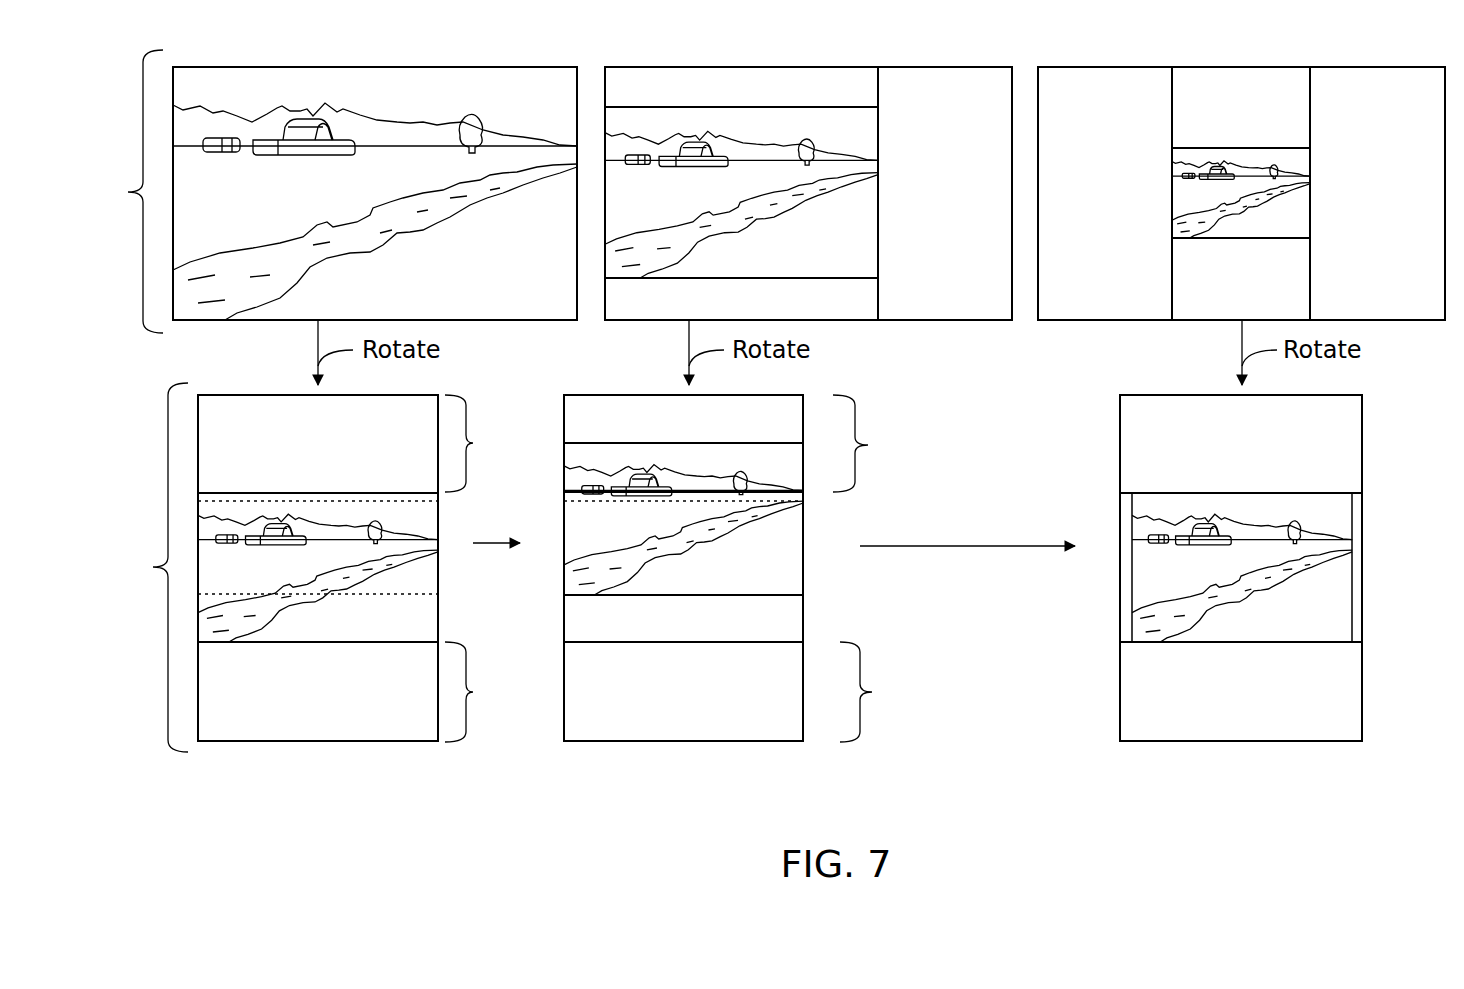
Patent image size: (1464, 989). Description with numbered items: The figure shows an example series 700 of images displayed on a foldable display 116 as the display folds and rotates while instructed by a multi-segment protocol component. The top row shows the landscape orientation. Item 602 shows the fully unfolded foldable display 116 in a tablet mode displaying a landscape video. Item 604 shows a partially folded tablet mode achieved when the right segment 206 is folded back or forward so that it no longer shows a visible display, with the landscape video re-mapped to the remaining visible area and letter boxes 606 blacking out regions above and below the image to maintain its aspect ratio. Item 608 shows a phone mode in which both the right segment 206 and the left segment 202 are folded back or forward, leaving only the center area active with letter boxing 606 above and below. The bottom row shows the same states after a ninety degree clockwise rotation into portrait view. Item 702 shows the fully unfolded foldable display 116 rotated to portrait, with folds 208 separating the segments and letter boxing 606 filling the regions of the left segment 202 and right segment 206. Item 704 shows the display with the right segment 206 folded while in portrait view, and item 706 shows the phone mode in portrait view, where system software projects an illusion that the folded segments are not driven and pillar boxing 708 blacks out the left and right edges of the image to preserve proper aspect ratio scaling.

The foldable display 116 is at (128, 401).
The left segment 202 is at (685, 443).
The right segment 206 is at (714, 692).
The fold 208 is at (438, 501).
The fully unfolded foldable display 602 is at (349, 48).
The partially folded foldable display 604 is at (729, 46).
The letter box 606 is at (781, 389).
The phone mode foldable display 608 is at (1215, 46).
The series 700 is at (814, 829).
The fully unfolded foldable display in portrait view 702 is at (318, 594).
The partially folded foldable display in portrait view 704 is at (683, 594).
The fully folded foldable display in portrait view 706 is at (1241, 590).
The pillar boxing 708 is at (1127, 568).